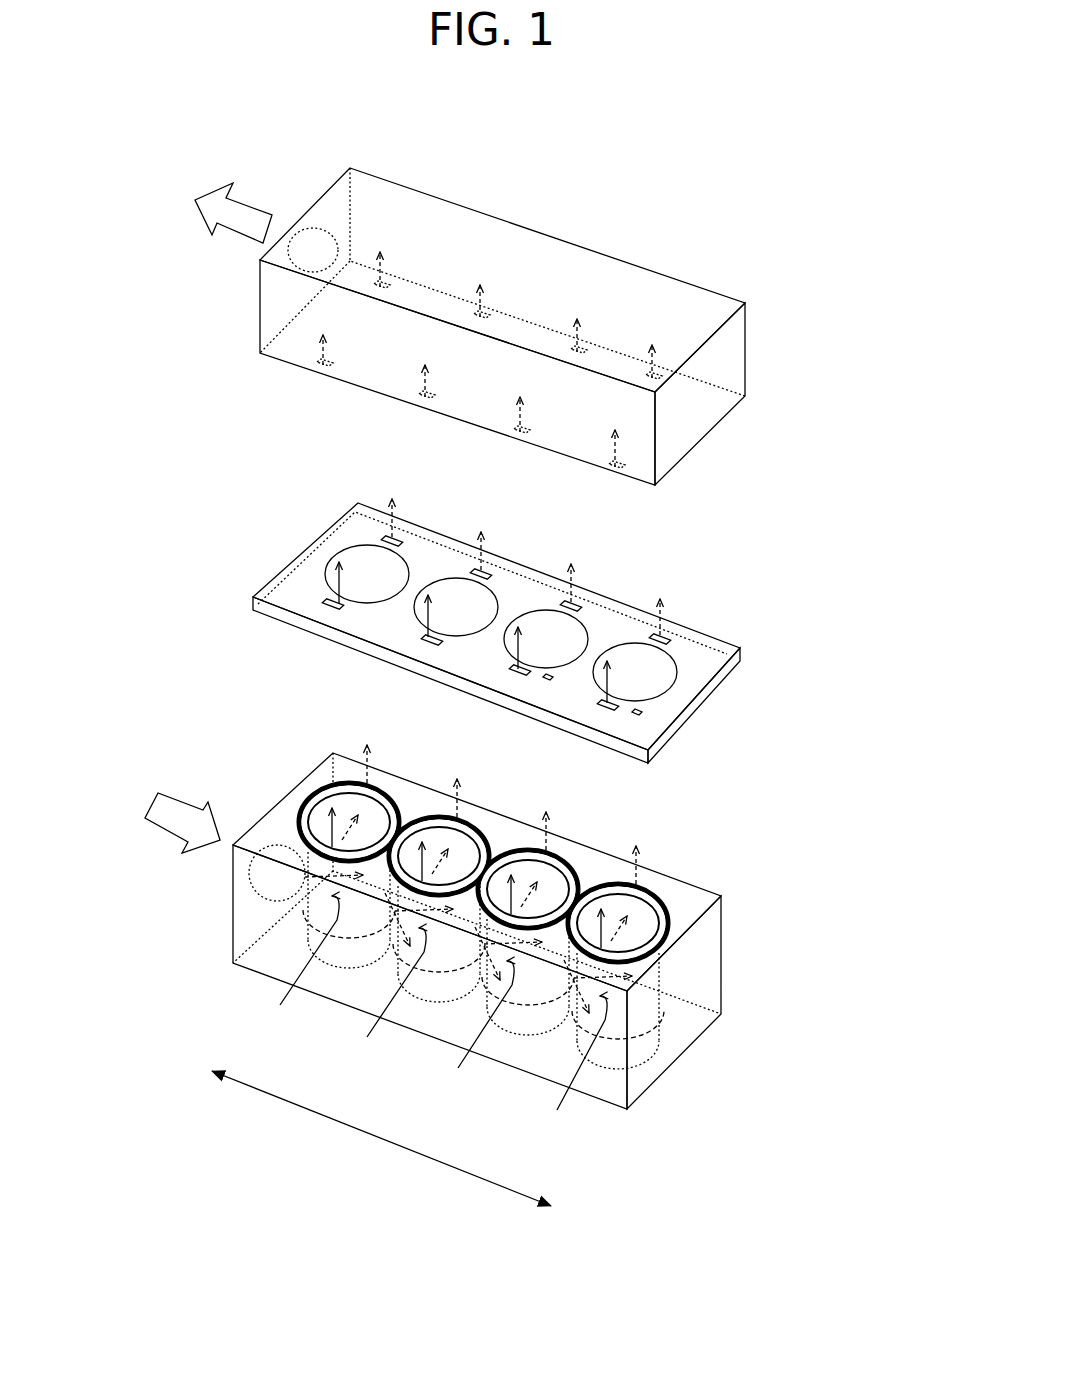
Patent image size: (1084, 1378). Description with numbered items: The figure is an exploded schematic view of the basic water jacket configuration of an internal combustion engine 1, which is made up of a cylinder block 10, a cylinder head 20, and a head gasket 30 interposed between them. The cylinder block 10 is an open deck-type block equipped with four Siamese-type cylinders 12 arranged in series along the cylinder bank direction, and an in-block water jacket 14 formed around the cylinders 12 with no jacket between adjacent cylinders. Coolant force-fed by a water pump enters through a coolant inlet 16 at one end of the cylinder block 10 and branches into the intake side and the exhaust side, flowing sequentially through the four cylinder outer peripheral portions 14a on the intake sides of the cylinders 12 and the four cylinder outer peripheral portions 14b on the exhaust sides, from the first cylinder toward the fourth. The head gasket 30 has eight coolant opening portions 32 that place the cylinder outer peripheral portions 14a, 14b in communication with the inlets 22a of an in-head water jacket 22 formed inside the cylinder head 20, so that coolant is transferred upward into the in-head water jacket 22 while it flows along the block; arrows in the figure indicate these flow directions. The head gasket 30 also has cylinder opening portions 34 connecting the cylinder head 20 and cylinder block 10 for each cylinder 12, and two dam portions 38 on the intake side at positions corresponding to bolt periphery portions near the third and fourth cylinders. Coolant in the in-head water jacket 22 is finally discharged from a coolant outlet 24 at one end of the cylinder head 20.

The internal combustion engine 1 is at (770, 133).
The cylinder block 10 is at (705, 872).
The cylinders 12 is at (327, 789).
The in-block water jacket 14 is at (293, 805).
The cylinder outer peripheral portions (intake side) 14a is at (442, 1007).
The cylinder outer peripheral portions (exhaust side) 14b is at (396, 806).
The coolant inlet 16 is at (252, 900).
The cylinder head 20 is at (733, 272).
The in-head water jacket 22 is at (520, 325).
The inlets of the in-head water jacket 22a is at (338, 380).
The coolant outlet 24 is at (321, 228).
The head gasket 30 is at (721, 619).
The coolant opening portions 32 is at (579, 606).
The cylinder opening portions 34 is at (350, 553).
The dam portions 38 is at (548, 684).